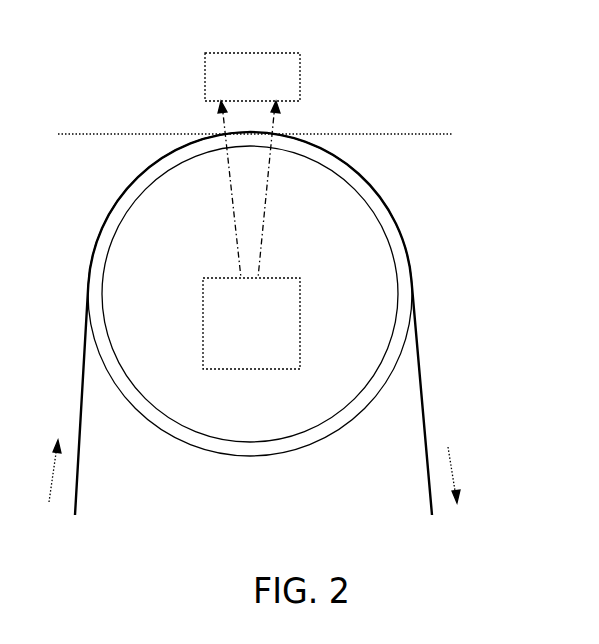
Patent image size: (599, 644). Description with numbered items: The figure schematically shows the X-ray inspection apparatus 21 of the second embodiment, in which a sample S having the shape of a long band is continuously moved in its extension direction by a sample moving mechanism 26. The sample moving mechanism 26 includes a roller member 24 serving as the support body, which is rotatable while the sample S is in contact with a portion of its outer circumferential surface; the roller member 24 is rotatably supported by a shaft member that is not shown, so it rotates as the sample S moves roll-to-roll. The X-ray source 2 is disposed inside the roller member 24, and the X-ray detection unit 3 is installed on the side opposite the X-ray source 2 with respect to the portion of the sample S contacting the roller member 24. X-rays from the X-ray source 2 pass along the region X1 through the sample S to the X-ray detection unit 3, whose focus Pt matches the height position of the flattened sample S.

The X-ray source 2 is at (300, 318).
The X-ray detection unit 3 is at (300, 72).
The X-ray inspection apparatus 21 is at (520, 106).
The roller member 24 is at (343, 427).
The sample moving mechanism 26 is at (297, 462).
The focus Pt is at (426, 136).
The sample S is at (427, 415).
The detection region X1 is at (265, 215).